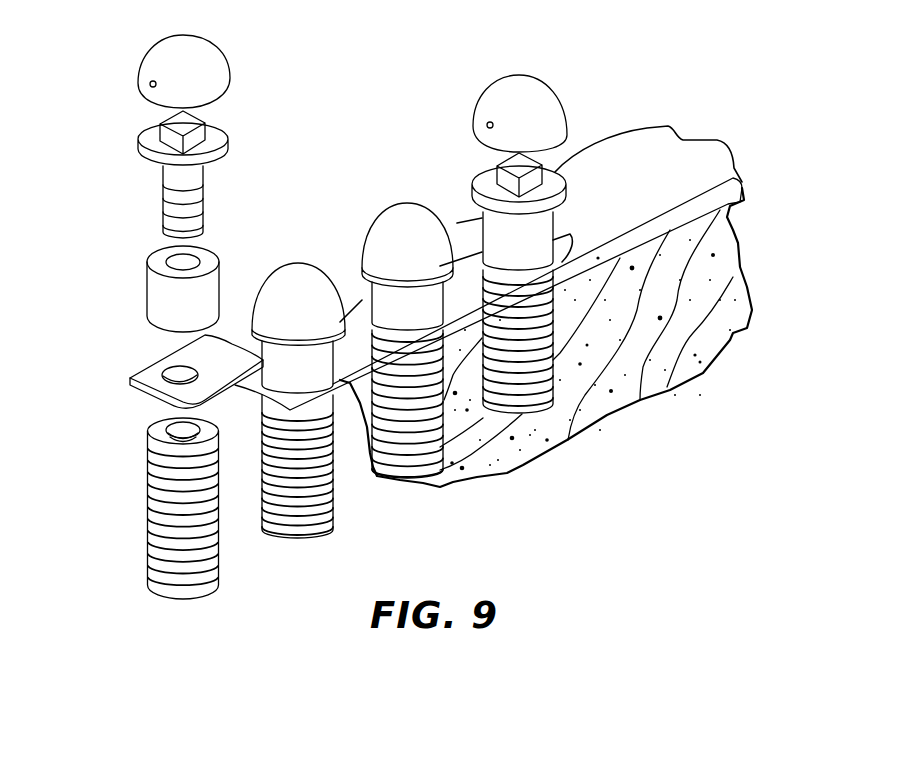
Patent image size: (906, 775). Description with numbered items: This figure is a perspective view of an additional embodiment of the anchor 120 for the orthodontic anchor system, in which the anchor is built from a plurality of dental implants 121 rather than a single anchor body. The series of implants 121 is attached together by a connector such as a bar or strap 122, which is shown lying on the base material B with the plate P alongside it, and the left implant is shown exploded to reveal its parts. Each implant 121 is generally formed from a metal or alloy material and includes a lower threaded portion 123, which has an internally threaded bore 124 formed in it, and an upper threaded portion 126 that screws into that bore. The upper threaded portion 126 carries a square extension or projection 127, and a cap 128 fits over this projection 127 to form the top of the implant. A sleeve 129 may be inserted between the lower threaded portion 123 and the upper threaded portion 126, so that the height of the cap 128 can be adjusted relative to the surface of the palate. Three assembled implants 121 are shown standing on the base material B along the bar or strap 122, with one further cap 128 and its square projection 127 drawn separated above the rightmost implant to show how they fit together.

The anchor 120 is at (357, 180).
The implant 121 is at (217, 577).
The bar or strap 122 is at (143, 373).
The lower threaded portion 123 is at (147, 527).
The internally threaded bore 124 is at (153, 428).
The upper threaded portion 126 is at (163, 194).
The square extension or projection 127 is at (160, 125).
The cap 128 is at (138, 75).
The sleeve 129 is at (148, 288).
The plate P is at (742, 182).
The base block B is at (740, 258).